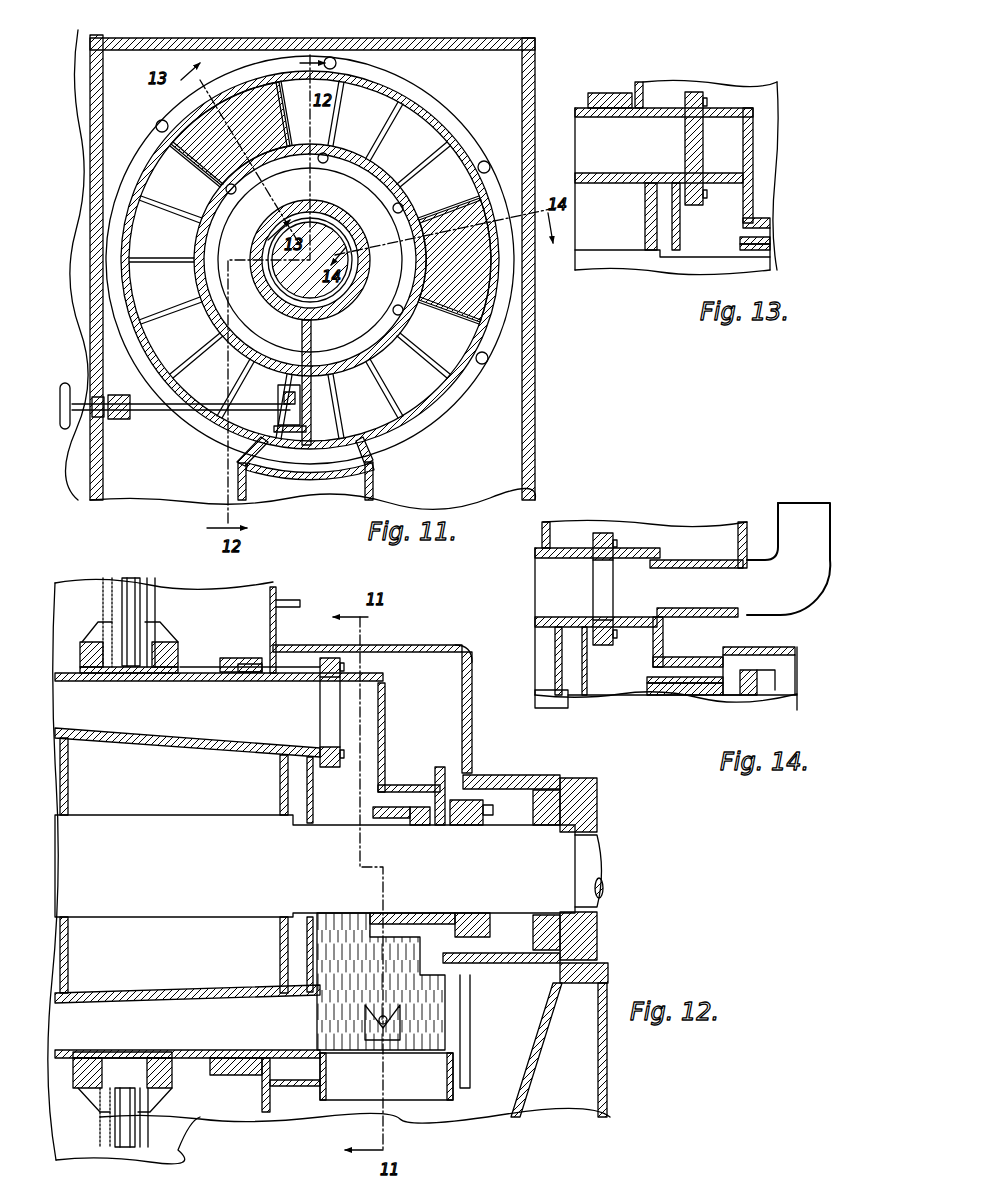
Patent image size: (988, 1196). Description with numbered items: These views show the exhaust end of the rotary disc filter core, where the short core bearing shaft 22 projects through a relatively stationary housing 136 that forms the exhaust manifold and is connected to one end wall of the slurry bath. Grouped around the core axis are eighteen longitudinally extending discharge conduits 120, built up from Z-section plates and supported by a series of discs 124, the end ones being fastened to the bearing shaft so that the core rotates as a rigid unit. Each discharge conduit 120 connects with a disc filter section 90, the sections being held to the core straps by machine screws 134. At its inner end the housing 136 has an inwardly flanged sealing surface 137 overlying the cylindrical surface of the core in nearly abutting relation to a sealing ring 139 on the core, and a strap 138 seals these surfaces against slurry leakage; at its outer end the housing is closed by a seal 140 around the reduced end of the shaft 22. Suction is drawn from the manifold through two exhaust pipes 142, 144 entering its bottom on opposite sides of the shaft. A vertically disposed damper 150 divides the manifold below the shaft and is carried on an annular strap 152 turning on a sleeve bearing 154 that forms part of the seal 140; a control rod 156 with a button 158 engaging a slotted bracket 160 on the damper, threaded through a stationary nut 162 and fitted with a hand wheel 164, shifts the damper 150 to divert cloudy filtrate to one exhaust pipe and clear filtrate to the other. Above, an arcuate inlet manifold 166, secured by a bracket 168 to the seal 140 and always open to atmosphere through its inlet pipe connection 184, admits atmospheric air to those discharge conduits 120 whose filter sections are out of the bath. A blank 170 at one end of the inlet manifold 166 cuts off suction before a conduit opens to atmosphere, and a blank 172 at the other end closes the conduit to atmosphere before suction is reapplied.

In FIG. 13, the core bearing shaft 22 is at (660, 268).
In FIG. 14, the core bearing shaft 22 is at (648, 702).
In FIG. 12, the core bearing shaft 22 is at (168, 820).
In FIG. 12, the disc filter section 90 is at (152, 1140).
In FIG. 11, the discharge conduit 120 is at (120, 210).
In FIG. 13, the discharge conduit 120 is at (576, 100).
In FIG. 12, the discharge conduit 120 is at (192, 668).
In FIG. 13, the disc 124 is at (645, 224).
In FIG. 14, the disc 124 is at (552, 668).
In FIG. 12, the disc 124 is at (68, 812).
In FIG. 12, the machine screw 134 is at (95, 640).
In FIG. 12, the housing 136 is at (440, 645).
In FIG. 12, the inwardly flanged sealing surface 137 is at (250, 680).
In FIG. 13, the strap 138 is at (618, 92).
In FIG. 12, the strap 138 is at (245, 657).
In FIG. 12, the sealing ring 139 is at (208, 680).
In FIG. 14, the seal 140 is at (722, 703).
In FIG. 12, the seal 140 is at (450, 825).
In FIG. 11, the exhaust pipe 142 is at (136, 500).
In FIG. 12, the exhaust pipe 142 is at (432, 1112).
In FIG. 11, the exhaust pipe 144 is at (483, 490).
In FIG. 11, the damper 150 is at (314, 365).
In FIG. 12, the damper 150 is at (442, 1025).
In FIG. 11, the annular strap 152 is at (275, 306).
In FIG. 13, the annular strap 152 is at (770, 238).
In FIG. 14, the annular strap 152 is at (655, 680).
In FIG. 12, the annular strap 152 is at (395, 800).
In FIG. 11, the sleeve bearing 154 is at (284, 322).
In FIG. 13, the sleeve bearing 154 is at (766, 250).
In FIG. 14, the sleeve bearing 154 is at (682, 700).
In FIG. 12, the sleeve bearing 154 is at (412, 826).
In FIG. 11, the control rod 156 is at (232, 402).
In FIG. 12, the control rod 156 is at (372, 1022).
In FIG. 11, the button 158 is at (278, 390).
In FIG. 11, the slotted bracket 160 is at (292, 432).
In FIG. 12, the slotted bracket 160 is at (372, 1040).
In FIG. 11, the stationary nut 162 is at (122, 414).
In FIG. 11, the hand wheel 164 is at (68, 432).
In FIG. 11, the inlet manifold 166 is at (415, 128).
In FIG. 13, the inlet manifold 166 is at (720, 112).
In FIG. 14, the inlet manifold 166 is at (640, 550).
In FIG. 12, the inlet manifold 166 is at (385, 717).
In FIG. 14, the bracket 168 is at (740, 652).
In FIG. 12, the bracket 168 is at (470, 772).
In FIG. 11, the blank 170 is at (212, 165).
In FIG. 13, the blank 170 is at (685, 152).
In FIG. 11, the blank 172 is at (488, 318).
In FIG. 14, the inlet pipe connection 184 is at (790, 513).